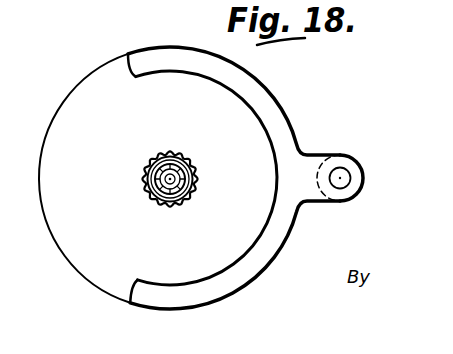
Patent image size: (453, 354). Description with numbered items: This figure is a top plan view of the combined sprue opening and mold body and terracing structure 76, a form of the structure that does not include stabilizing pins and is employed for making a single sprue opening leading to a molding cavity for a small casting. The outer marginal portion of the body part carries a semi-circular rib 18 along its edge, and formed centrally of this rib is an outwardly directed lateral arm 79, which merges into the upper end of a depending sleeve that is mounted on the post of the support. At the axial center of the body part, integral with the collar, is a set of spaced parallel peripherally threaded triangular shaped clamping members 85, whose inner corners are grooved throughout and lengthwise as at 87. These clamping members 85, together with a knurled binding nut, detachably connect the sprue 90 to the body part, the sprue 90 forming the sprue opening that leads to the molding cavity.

The combined sprue opening and mold body and terracing structure 76 is at (91, 109).
The arcuate rim 18 is at (265, 101).
The outwardly directed lateral arm 79 is at (307, 173).
The clamping members 85 is at (181, 153).
The grooves 87 is at (197, 189).
The sprue 90 is at (153, 193).